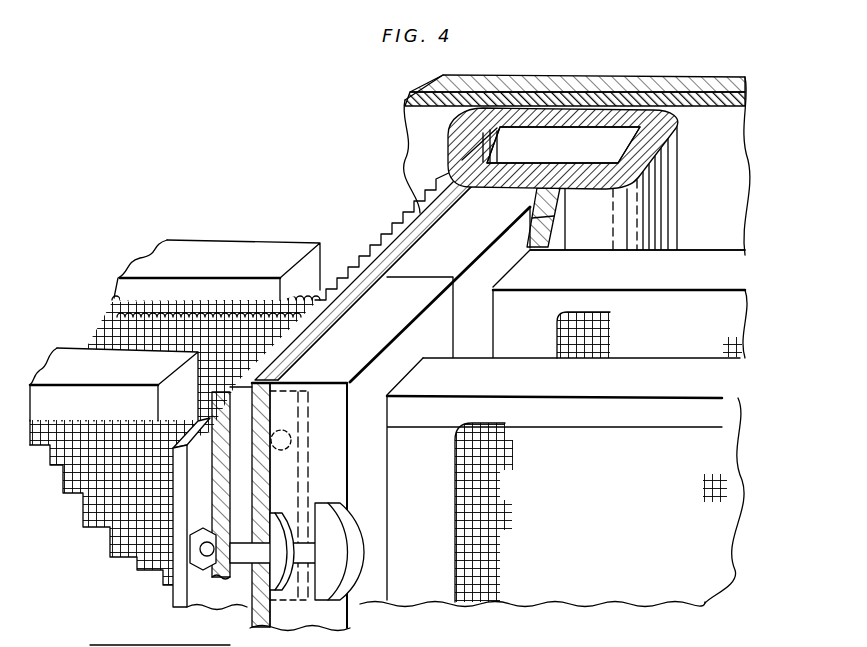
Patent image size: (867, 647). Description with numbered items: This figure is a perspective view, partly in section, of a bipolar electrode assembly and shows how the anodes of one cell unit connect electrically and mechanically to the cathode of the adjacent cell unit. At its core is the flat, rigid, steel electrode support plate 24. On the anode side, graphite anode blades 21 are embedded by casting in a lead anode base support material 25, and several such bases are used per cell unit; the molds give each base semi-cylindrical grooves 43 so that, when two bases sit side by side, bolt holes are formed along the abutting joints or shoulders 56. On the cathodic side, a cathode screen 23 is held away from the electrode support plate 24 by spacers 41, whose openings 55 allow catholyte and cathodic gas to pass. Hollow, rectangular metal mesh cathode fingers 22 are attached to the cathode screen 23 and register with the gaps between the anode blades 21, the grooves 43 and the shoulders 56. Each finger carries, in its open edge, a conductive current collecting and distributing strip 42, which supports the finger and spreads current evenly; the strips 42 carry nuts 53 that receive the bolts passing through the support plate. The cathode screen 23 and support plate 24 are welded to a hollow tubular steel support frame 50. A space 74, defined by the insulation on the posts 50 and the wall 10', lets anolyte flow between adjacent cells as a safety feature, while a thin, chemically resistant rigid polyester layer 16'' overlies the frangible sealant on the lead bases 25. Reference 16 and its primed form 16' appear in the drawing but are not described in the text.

The wall 10' is at (575, 78).
The space 74 is at (652, 108).
The belt loop 16 is at (550, 148).
The support frame 50 is at (598, 165).
The belt end portion 16' is at (531, 213).
The thinner layer 16'' is at (637, 187).
The anode blades 21 is at (245, 243).
The cathode fingers 22 is at (120, 310).
The cathode screen 23 is at (387, 241).
The electrode support plate 24 is at (420, 213).
The anode base support material 25 is at (494, 222).
The spacers 41 is at (243, 407).
The current collecting and distributing strips 42 is at (177, 597).
The grooves 43 is at (355, 523).
The nuts 53 is at (222, 587).
The openings 55 is at (285, 527).
The joints or shoulders 56 is at (337, 407).